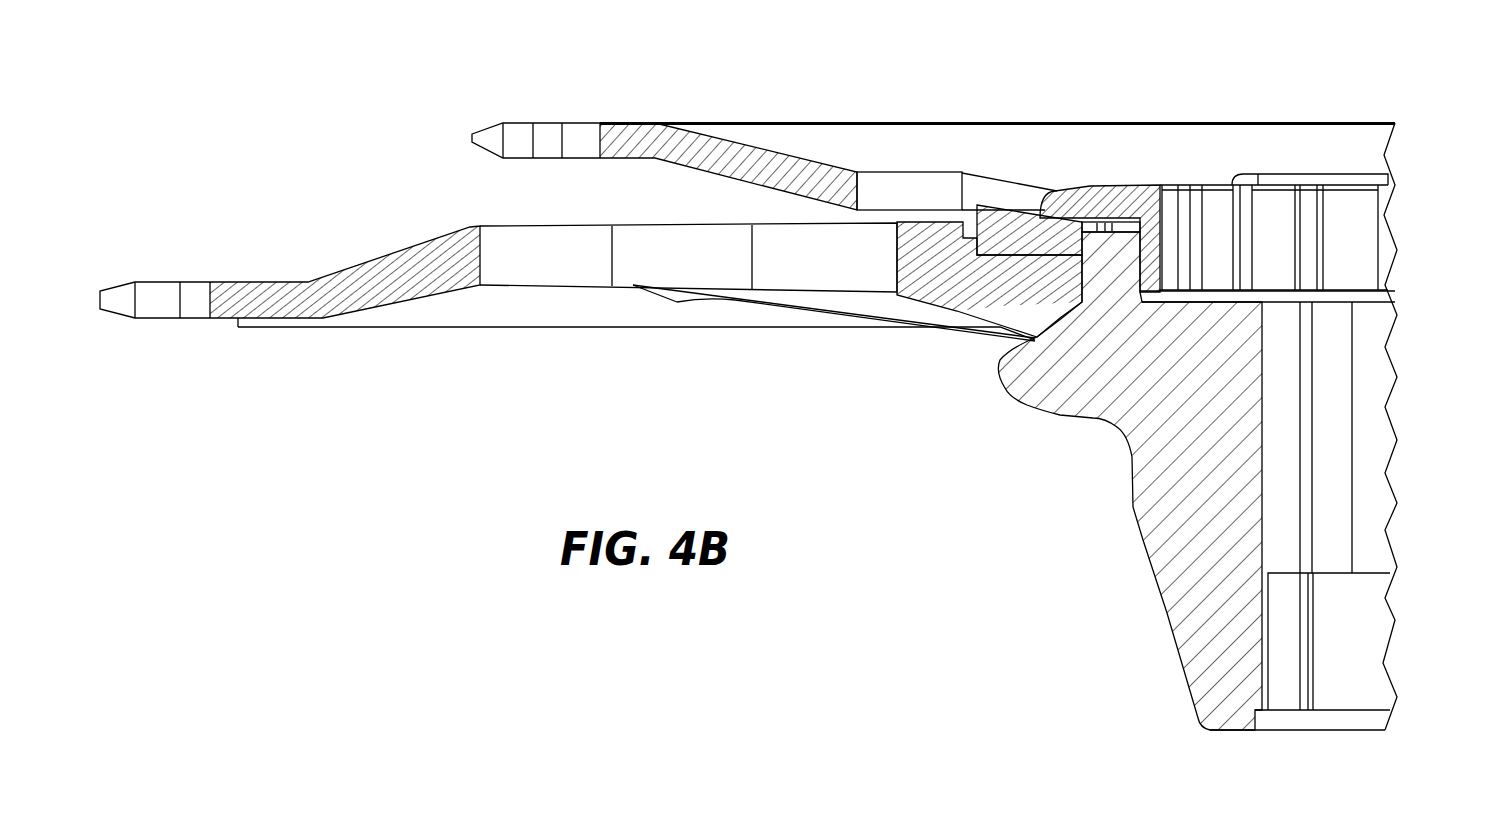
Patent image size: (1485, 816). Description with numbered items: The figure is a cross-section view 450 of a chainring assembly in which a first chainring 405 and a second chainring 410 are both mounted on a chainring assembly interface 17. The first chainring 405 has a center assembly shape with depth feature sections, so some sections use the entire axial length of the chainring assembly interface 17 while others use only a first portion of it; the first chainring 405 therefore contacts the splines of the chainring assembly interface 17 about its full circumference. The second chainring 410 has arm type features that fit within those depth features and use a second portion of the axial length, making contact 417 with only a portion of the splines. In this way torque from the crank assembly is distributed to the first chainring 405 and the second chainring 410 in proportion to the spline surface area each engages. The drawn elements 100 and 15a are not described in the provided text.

The cross-section view 450 is at (258, 105).
The first chainring 405 is at (228, 322).
The second chainring 410 is at (582, 121).
The contact 417 is at (1068, 188).
The chainring assembly interface 17 is at (1023, 402).
The surgical instrument 100 is at (1385, 243).
The shaft portion 15a is at (1375, 632).